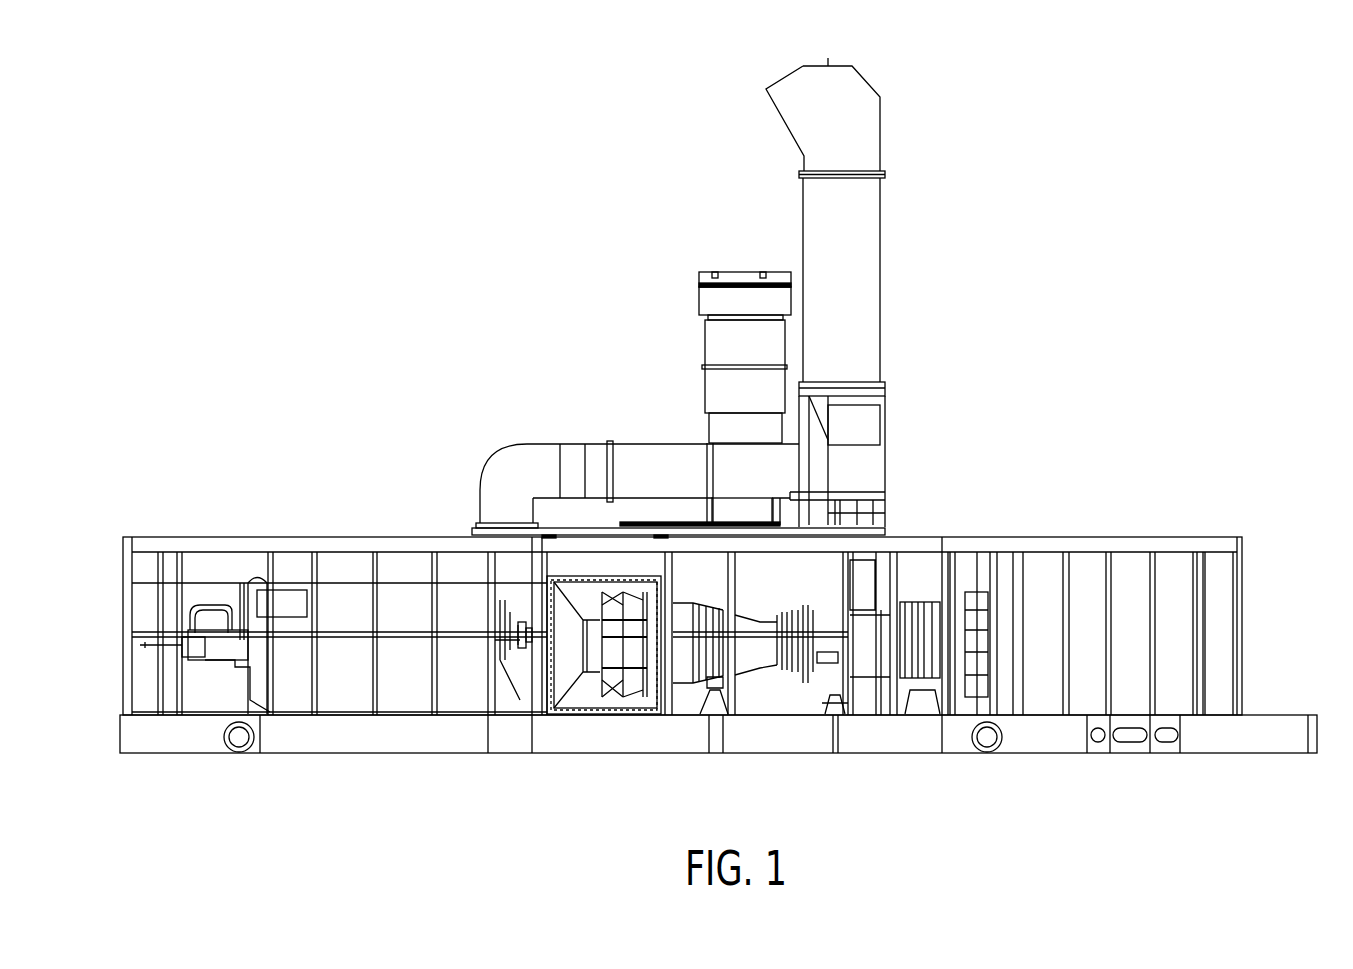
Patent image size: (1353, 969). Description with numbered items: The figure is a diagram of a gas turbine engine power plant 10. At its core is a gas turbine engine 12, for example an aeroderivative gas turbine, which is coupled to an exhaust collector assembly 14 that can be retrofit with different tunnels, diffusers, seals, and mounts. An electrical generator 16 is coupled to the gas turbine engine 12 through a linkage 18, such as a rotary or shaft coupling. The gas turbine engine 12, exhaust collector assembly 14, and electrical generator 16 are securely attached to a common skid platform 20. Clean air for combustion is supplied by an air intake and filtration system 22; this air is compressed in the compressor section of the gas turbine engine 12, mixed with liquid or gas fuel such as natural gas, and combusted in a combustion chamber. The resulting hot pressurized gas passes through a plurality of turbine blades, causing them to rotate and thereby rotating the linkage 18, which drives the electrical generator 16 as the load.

The gas turbine engine power plant 10 is at (973, 202).
The gas turbine engine 12 is at (1000, 763).
The exhaust collector assembly 14 is at (700, 763).
The electrical generator 16 is at (530, 763).
The linkage 18 is at (530, 637).
The skid platform 20 is at (1247, 753).
The air intake and filtration system 22 is at (1087, 505).